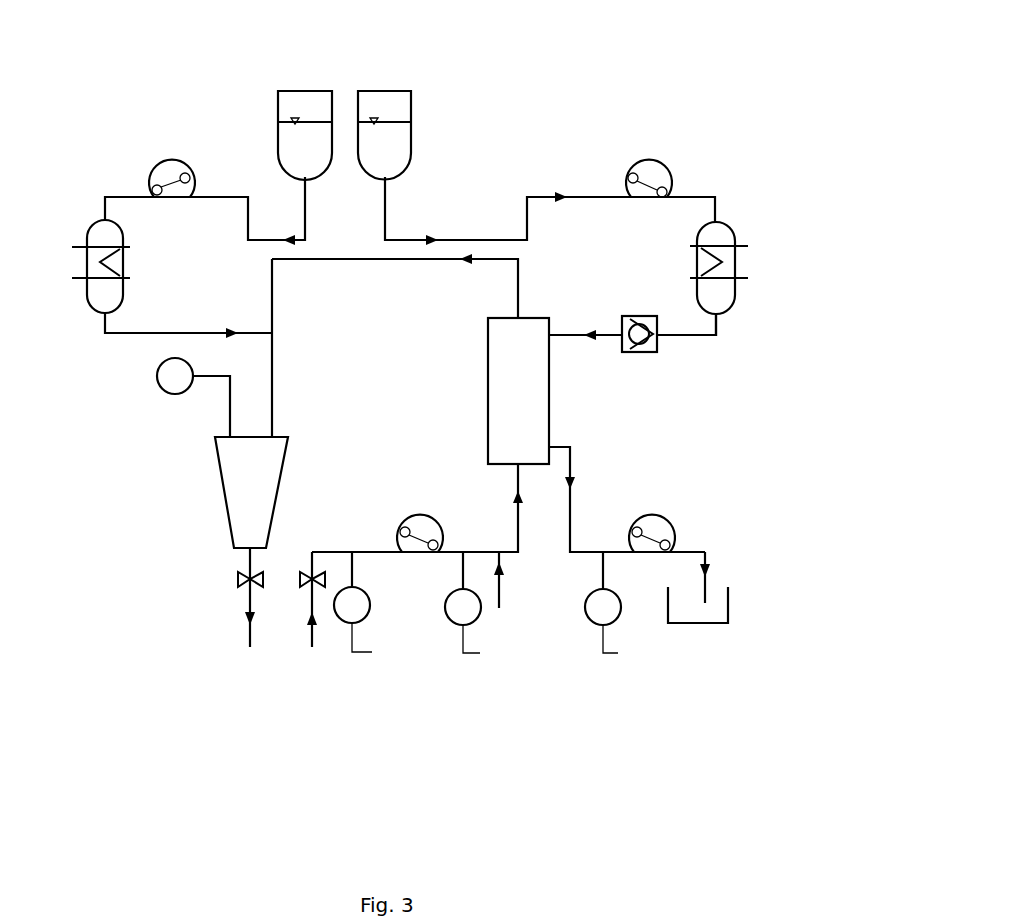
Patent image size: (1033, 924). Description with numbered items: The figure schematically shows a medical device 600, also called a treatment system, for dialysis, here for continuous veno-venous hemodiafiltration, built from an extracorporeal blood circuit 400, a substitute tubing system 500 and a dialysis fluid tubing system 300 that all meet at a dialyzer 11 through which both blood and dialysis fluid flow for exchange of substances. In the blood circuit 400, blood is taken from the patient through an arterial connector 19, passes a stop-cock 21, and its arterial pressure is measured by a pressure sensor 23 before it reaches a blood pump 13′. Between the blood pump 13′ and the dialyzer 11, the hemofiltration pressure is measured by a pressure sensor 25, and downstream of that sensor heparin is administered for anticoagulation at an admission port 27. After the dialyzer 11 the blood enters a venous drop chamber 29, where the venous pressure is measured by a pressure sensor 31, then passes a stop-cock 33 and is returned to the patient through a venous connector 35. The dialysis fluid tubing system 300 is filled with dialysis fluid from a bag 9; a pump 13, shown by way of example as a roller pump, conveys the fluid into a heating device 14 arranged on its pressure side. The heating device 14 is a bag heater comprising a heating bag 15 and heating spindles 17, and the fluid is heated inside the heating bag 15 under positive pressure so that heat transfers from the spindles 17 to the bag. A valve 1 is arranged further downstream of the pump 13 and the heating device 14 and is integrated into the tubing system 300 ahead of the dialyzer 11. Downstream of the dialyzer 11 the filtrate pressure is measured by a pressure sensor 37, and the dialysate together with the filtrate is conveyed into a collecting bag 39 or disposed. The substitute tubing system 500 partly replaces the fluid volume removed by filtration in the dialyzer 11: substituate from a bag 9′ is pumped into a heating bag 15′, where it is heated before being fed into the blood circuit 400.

The medical device 600 is at (553, 90).
The substitute tubing system 500 is at (216, 286).
The dialysis fluid tubing system 300 is at (632, 271).
The extracorporeal blood circuit 400 is at (405, 388).
The bag 9′ is at (278, 127).
The bag 9 is at (411, 127).
The pump 13 is at (641, 163).
The blood pump 13′ is at (408, 519).
The heating bag 15′ is at (92, 226).
The heating bag 15 is at (727, 227).
The heating spindles 17 is at (741, 248).
The heating device 14 is at (747, 306).
The dialyzer 11 is at (488, 343).
The valve 1 is at (645, 353).
The pressure sensor 31 is at (158, 383).
The venous drop chamber 29 is at (222, 485).
The venous connector 35 is at (250, 640).
The stop-cock 33 is at (240, 582).
The arterial connector 19 is at (312, 637).
The stop-cock 21 is at (300, 573).
The pressure sensor 23 is at (369, 611).
The pressure sensor 25 is at (478, 611).
The pressure sensor 37 is at (618, 611).
The admission port 27 is at (500, 592).
The collecting bag 39 is at (690, 624).